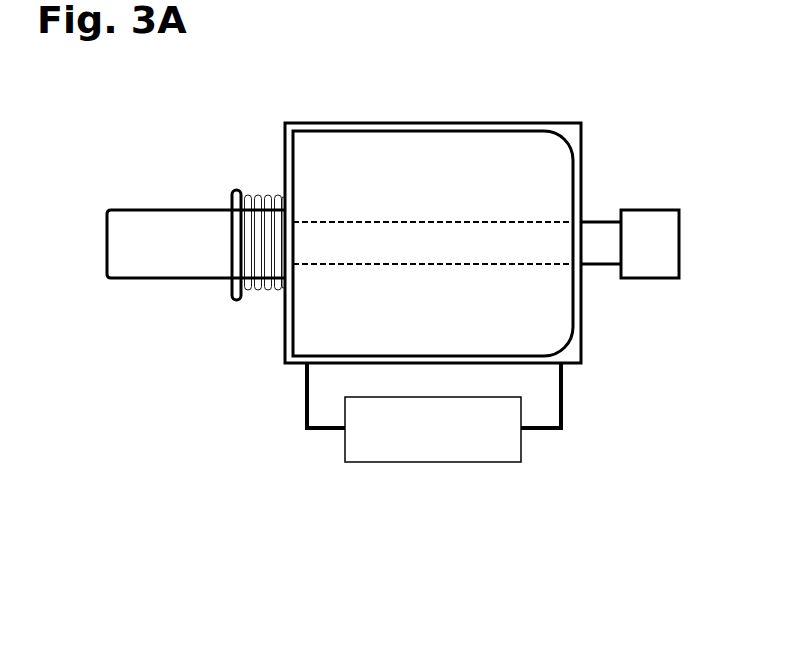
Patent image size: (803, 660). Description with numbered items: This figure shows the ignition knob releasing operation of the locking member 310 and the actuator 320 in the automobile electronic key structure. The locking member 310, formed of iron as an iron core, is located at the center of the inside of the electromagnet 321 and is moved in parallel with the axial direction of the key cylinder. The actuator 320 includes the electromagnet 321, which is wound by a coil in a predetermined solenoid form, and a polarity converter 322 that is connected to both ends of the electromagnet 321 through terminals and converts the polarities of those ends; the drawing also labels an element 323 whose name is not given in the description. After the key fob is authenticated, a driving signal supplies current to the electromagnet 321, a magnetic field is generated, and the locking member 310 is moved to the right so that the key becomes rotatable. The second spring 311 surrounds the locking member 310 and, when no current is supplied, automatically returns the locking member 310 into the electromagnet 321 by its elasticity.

The locking member 310 is at (160, 222).
The second spring 311 is at (263, 195).
The actuator 320 is at (452, 370).
The electromagnet 321 is at (325, 332).
The polarity converter 322 is at (505, 555).
The coil 323 is at (446, 266).